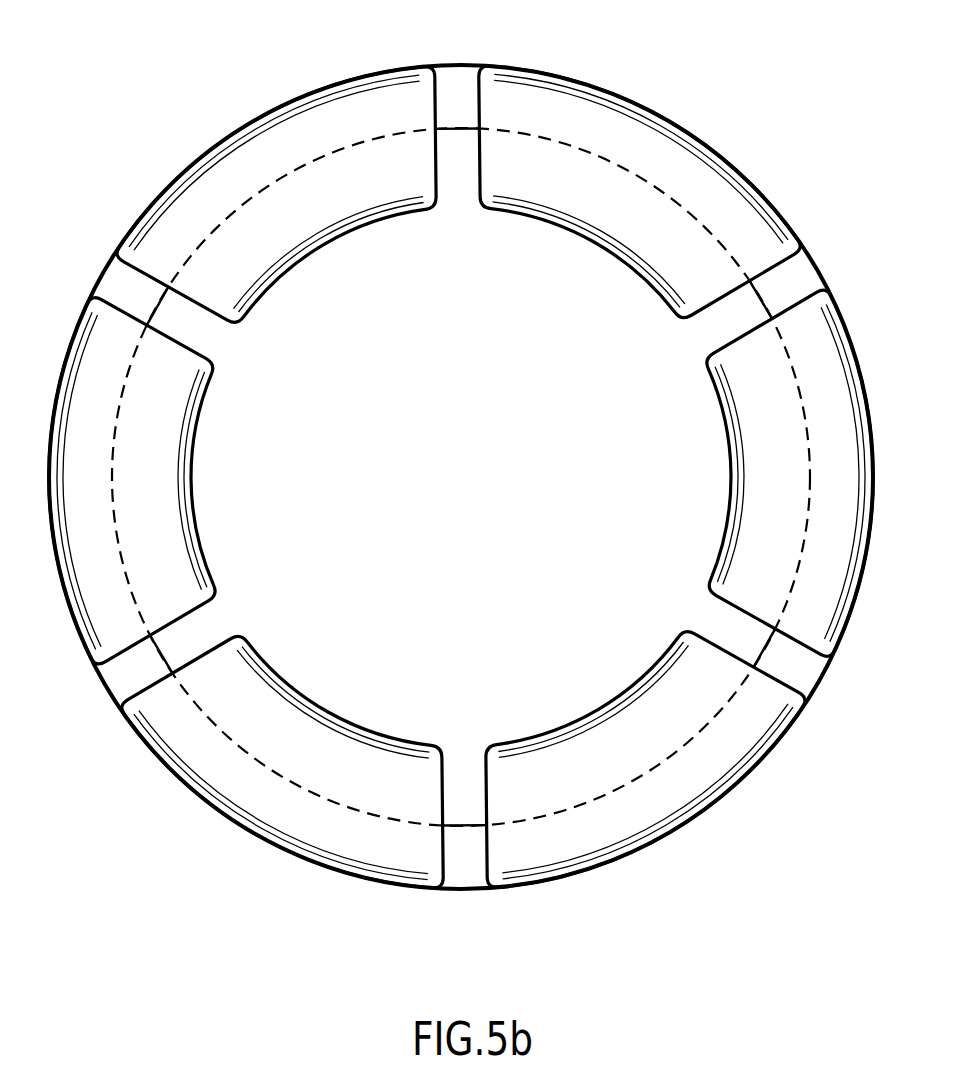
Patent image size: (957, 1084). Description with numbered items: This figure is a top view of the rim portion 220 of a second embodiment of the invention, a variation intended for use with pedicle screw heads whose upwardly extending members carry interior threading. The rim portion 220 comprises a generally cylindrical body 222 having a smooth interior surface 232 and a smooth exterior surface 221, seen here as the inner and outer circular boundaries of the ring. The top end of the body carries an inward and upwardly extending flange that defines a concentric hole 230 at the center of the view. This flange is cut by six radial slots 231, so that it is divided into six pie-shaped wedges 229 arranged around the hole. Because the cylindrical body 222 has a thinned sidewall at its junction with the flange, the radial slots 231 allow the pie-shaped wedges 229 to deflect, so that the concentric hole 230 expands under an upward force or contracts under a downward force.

The rim portion 220 is at (461, 497).
The exterior surface 221 is at (469, 898).
The cylindrical body 222 is at (133, 677).
The pie-shaped wedges 229 is at (245, 258).
The concentric hole 230 is at (392, 483).
The radial slots 231 is at (458, 188).
The interior surface 232 is at (468, 812).